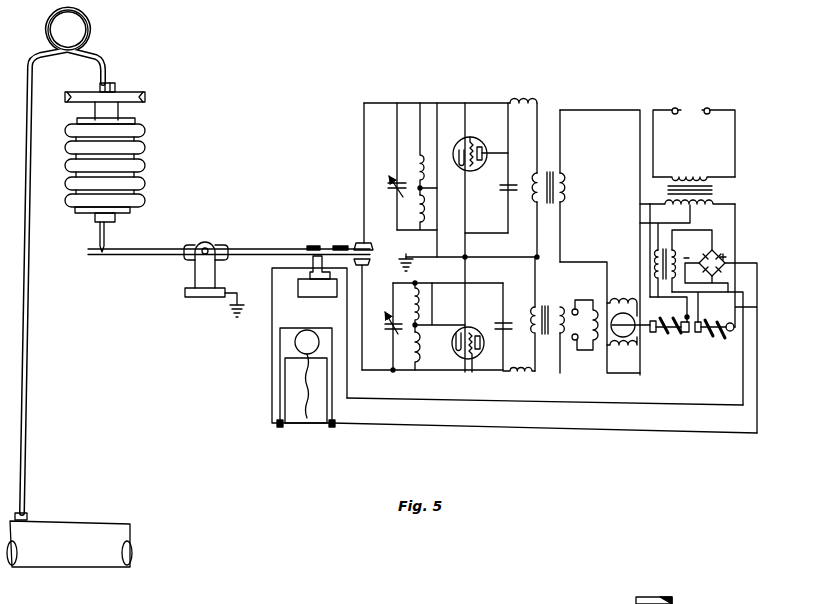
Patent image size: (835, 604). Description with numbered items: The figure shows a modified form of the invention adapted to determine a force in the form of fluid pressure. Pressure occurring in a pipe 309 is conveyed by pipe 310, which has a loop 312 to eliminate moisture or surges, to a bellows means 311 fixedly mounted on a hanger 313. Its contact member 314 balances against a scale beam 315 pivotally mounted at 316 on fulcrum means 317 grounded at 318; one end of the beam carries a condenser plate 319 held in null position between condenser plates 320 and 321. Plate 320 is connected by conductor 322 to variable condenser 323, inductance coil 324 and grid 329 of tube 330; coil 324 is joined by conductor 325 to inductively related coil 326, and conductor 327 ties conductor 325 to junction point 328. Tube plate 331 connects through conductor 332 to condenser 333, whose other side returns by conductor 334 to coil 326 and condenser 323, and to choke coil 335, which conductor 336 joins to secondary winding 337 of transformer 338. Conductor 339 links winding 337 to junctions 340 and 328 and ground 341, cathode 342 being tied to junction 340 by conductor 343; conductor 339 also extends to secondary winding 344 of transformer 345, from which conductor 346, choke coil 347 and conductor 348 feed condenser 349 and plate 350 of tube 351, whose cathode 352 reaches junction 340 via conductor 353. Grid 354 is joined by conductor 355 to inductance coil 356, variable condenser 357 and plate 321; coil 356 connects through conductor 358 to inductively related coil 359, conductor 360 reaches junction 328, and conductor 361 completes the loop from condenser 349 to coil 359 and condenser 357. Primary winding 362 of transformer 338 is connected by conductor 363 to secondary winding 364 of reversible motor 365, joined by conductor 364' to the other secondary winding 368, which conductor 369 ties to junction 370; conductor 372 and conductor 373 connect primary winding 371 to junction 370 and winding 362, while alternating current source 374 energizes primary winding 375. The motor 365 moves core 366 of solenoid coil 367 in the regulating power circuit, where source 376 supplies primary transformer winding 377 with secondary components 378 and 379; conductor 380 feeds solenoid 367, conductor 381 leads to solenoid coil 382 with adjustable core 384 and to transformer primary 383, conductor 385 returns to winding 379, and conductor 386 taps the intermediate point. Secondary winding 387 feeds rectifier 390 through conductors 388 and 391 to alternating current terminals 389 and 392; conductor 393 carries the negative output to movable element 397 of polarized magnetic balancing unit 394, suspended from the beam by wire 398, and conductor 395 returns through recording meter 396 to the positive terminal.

The pipe 309 is at (82, 568).
The pipe 310 is at (30, 298).
The bellows means 311 is at (146, 150).
The loop 312 is at (91, 34).
The hanger 313 is at (142, 97).
The contact member 314 is at (105, 233).
The scale beam 315 is at (153, 256).
The pivot 316 is at (206, 250).
The fulcrum means 317 is at (193, 298).
The ground 318 is at (230, 313).
The condenser plate 319 is at (357, 247).
The condenser plate 320 is at (373, 314).
The condenser plate 321 is at (364, 240).
The conductor 322 is at (393, 371).
The variable condenser 323 is at (395, 332).
The inductance coil 324 is at (416, 372).
The conductor 325 is at (422, 335).
The inductance coil 326 is at (423, 300).
The conductor 327 is at (430, 325).
The junction point 328 is at (451, 180).
The grid 329 is at (464, 353).
The tube 330 is at (470, 375).
The tube plate 331 is at (480, 350).
The conductor 332 is at (484, 377).
The condenser 333 is at (506, 331).
The conductor 334 is at (397, 302).
The choke coil 335 is at (525, 378).
The conductor 336 is at (536, 356).
The secondary winding 337 is at (530, 308).
The transformer 338 is at (547, 296).
The conductor 339 is at (534, 285).
The junction 340 is at (473, 257).
The ground 341 is at (401, 260).
The cathode 342 is at (470, 328).
The conductor 343 is at (466, 281).
The secondary winding 344 is at (543, 172).
The transformer 345 is at (569, 170).
The conductor 346 is at (540, 122).
The choke coil 347 is at (528, 102).
The conductor 348 is at (490, 103).
The condenser 349 is at (505, 192).
The plate 350 is at (483, 147).
The tube 351 is at (475, 134).
The cathode 352 is at (458, 156).
The conductor 353 is at (466, 218).
The grid 354 is at (468, 143).
The conductor 355 is at (364, 106).
The inductance coil 356 is at (416, 157).
The variable condenser 357 is at (386, 186).
The conductor 358 is at (423, 188).
The inductance coil 359 is at (413, 208).
The conductor 360 is at (437, 202).
The conductor 361 is at (536, 258).
The primary winding 362 is at (591, 299).
The conductor 363 is at (596, 376).
The secondary winding 364 is at (654, 364).
The conductor 364' is at (657, 342).
The motor 365 is at (628, 330).
The core 366 is at (683, 331).
The solenoid coil 367 is at (661, 321).
The secondary winding 368 is at (621, 302).
The conductor 369 is at (598, 263).
The junction 370 is at (561, 258).
The primary winding 371 is at (567, 193).
The conductor 372 is at (640, 133).
The conductor 373 is at (561, 226).
The alternating current source 374 is at (573, 343).
The primary winding 375 is at (628, 348).
The alternating current source 376 is at (690, 104).
The primary transformer winding 377 is at (696, 176).
The secondary winding component 378 is at (640, 222).
The secondary winding component 379 is at (715, 204).
The conductor 380 is at (640, 203).
The conductor 381 is at (689, 308).
The solenoid coil 382 is at (713, 334).
The transformer primary 383 is at (655, 257).
The core 384 is at (718, 334).
The conductor 385 is at (757, 307).
The conductor 386 is at (650, 226).
The secondary winding 387 is at (692, 240).
The conductor 388 is at (750, 291).
The alternating current terminal 389 is at (719, 276).
The rectifier 390 is at (722, 255).
The conductor 391 is at (700, 230).
The alternating current terminal 392 is at (717, 246).
The conductor 393 is at (655, 405).
The polarized magnetic balancing unit 394 is at (298, 290).
The conductor 395 is at (271, 398).
The recording meter 396 is at (308, 328).
The movable element 397 is at (298, 281).
The wire 398 is at (312, 258).